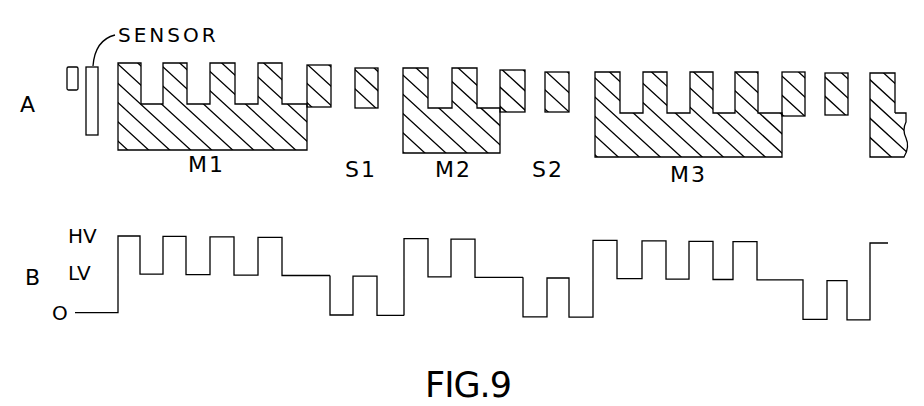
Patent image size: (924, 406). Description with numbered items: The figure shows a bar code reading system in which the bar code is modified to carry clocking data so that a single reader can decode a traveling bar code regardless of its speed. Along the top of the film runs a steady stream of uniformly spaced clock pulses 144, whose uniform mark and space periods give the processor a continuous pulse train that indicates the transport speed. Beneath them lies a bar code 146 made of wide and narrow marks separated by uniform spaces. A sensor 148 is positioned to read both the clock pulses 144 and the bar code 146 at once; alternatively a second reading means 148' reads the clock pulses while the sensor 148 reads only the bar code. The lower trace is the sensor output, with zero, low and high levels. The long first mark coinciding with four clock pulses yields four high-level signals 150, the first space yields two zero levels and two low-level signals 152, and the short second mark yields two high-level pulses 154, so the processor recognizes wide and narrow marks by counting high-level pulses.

The clock pulses 144 is at (897, 92).
The bar code 146 is at (906, 142).
The sensor 148 is at (73, 121).
The second reading means 148' is at (51, 56).
The four high-level signals 150 is at (283, 225).
The two zero signal levels and two low-level signals 152 is at (397, 228).
The two high-level signal pulses 154 is at (515, 228).